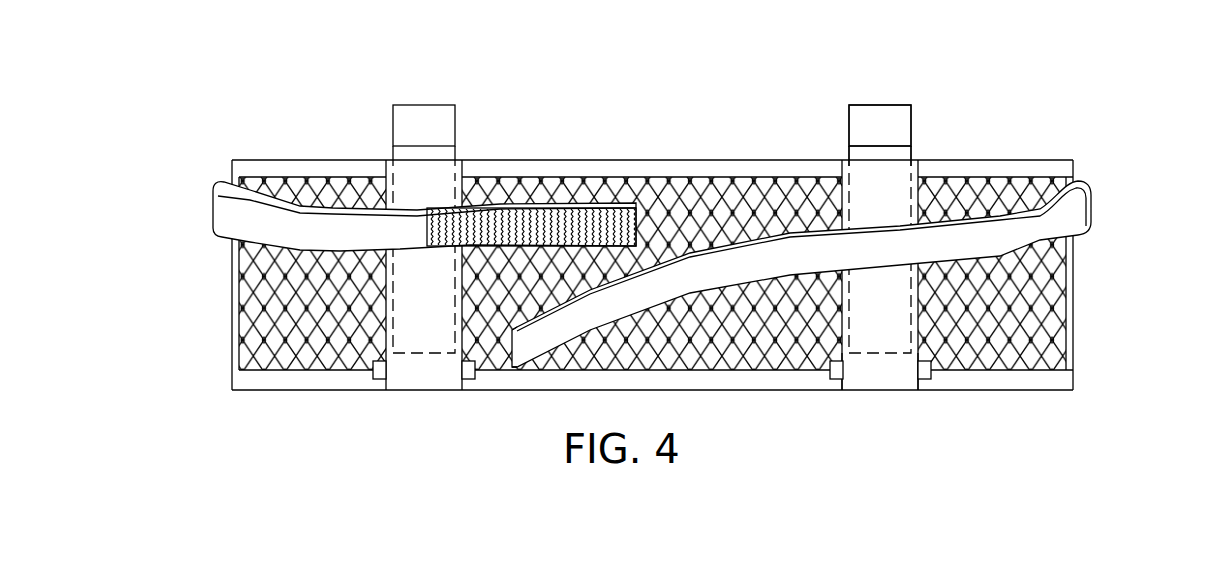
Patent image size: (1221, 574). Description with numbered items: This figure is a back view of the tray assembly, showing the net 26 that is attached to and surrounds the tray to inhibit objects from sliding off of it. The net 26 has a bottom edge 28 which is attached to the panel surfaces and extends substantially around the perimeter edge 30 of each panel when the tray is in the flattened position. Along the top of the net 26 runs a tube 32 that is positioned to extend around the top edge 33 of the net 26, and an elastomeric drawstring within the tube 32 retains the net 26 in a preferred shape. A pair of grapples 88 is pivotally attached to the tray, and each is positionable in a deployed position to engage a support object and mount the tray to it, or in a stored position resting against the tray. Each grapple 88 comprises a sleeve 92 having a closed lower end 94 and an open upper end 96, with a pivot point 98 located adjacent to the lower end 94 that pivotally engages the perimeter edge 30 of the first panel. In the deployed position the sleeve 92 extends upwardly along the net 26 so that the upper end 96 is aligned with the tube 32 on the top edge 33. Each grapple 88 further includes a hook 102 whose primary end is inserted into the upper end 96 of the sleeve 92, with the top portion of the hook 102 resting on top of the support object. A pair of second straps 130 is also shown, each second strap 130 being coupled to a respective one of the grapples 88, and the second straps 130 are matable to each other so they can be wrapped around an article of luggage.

The net 26 is at (728, 195).
The bottom edge 28 is at (1032, 370).
The perimeter edge 30 is at (232, 380).
The tube 32 is at (338, 160).
The top edge 33 is at (278, 178).
The grapple 88 is at (490, 106).
The sleeve 92 is at (918, 197).
The lower end 94 is at (888, 390).
The upper end 96 is at (872, 160).
The pivot point 98 is at (836, 375).
The hook 102 is at (878, 104).
The second strap 130 is at (228, 218).